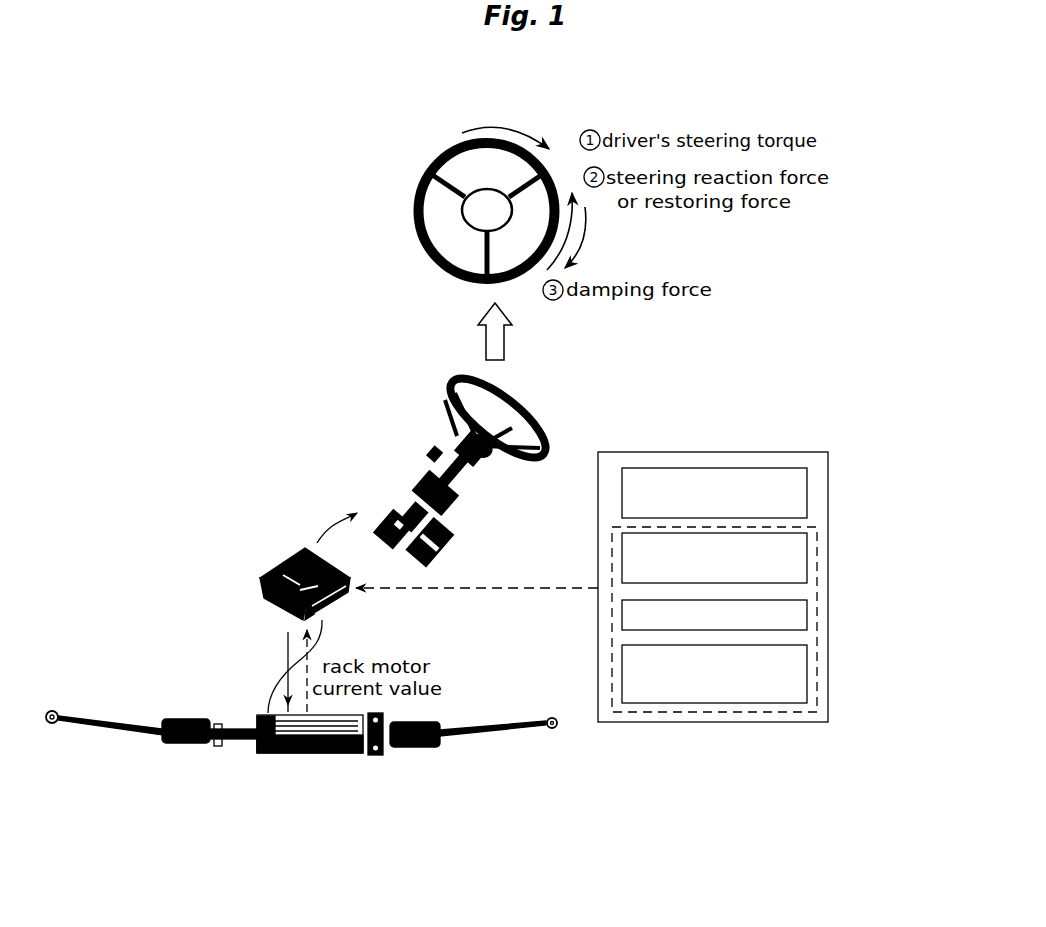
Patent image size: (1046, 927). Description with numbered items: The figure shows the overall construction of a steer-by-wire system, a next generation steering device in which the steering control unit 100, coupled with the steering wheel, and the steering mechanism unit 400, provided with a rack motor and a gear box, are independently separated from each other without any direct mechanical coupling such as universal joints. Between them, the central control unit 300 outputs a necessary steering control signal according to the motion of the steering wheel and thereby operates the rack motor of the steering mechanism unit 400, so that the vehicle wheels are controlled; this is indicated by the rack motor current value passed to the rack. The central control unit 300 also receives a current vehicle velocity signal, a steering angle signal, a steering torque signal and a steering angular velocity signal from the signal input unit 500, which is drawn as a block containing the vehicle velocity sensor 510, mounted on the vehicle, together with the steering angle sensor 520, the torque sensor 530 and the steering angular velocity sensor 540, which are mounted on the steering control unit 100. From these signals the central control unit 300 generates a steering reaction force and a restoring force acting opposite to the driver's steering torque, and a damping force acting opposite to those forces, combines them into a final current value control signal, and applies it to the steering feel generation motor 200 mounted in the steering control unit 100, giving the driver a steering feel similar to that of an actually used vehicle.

The steering control unit 100 is at (460, 382).
The steering feel generation motor 200 is at (378, 487).
The central control unit 300 is at (273, 565).
The steering mechanism unit 400 is at (312, 755).
The signal input unit 500 is at (828, 452).
The vehicle velocity sensor 510 is at (677, 470).
The steering angle sensor 520 is at (803, 552).
The torque sensor 530 is at (803, 613).
The steering angular velocity sensor 540 is at (803, 675).